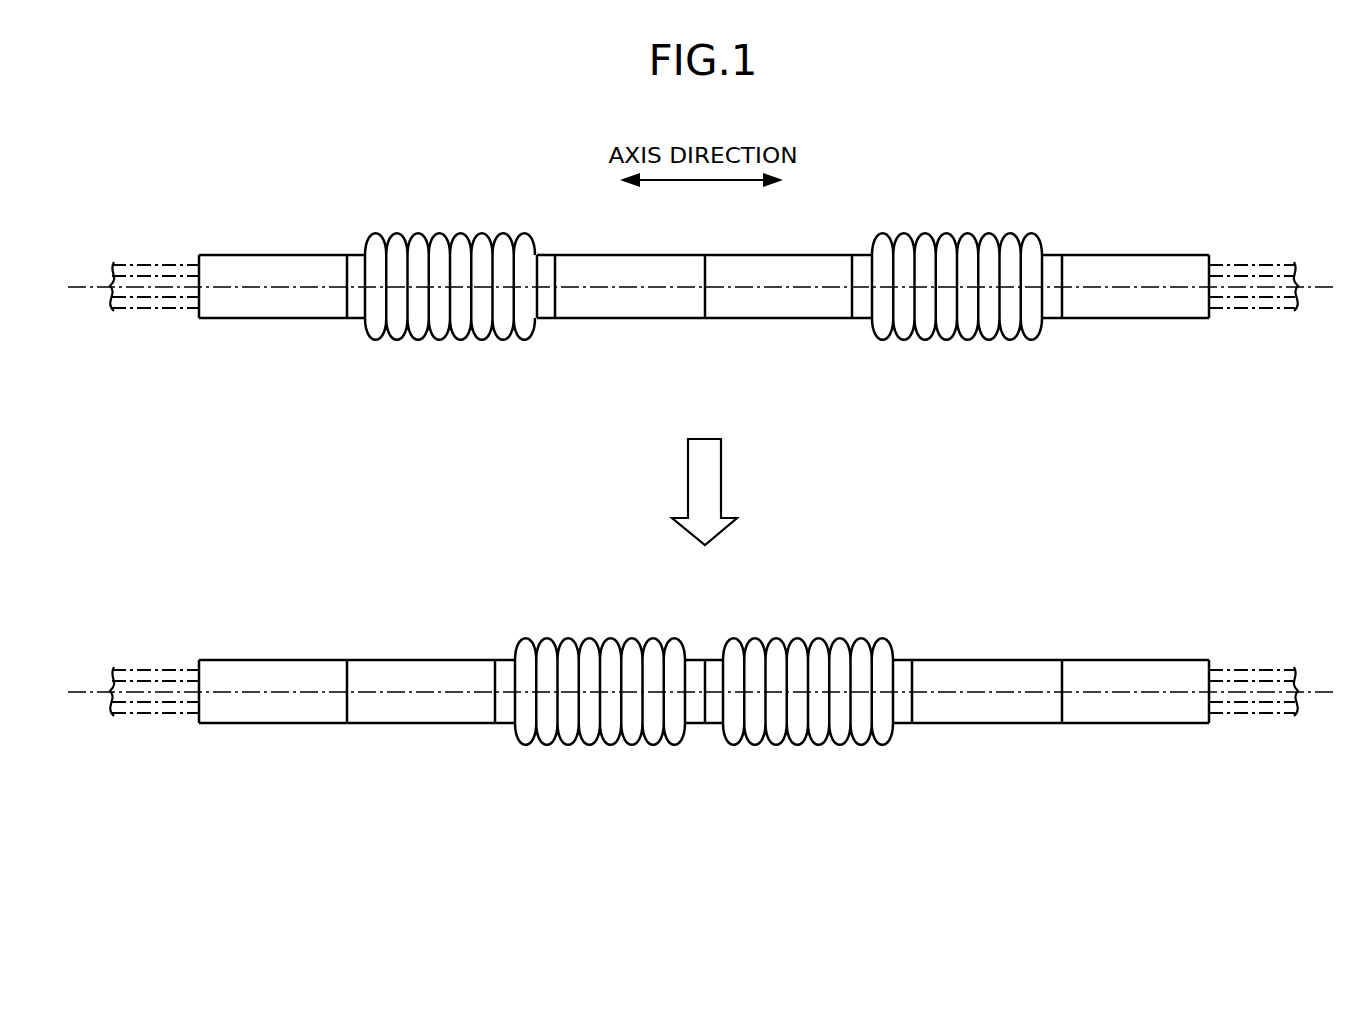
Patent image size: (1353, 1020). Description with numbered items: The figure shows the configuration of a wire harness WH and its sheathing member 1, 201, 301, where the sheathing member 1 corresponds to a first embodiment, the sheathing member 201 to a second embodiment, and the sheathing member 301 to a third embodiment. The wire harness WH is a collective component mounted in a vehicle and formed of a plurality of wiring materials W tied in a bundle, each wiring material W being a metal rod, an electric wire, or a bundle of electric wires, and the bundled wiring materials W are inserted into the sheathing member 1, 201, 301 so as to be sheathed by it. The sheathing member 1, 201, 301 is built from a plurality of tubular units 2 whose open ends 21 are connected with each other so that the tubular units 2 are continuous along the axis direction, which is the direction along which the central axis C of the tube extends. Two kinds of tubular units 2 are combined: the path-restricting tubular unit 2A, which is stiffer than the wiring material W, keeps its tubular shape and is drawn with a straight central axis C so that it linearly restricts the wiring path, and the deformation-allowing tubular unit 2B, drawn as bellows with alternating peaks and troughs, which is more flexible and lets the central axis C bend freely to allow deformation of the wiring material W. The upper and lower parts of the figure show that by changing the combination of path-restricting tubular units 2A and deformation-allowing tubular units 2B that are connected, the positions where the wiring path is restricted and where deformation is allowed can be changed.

The wire harness WH is at (1120, 161).
The wiring material W is at (1262, 264).
The sheathing member 1 is at (700, 495).
The sheathing member 201 is at (700, 495).
The sheathing member 301 is at (1177, 235).
The tubular unit 2 is at (704, 532).
The path-restricting tubular unit 2A is at (273, 320).
The deformation-allowing tubular unit 2B is at (448, 343).
The open end 21 is at (199, 253).
The central axis C is at (256, 285).